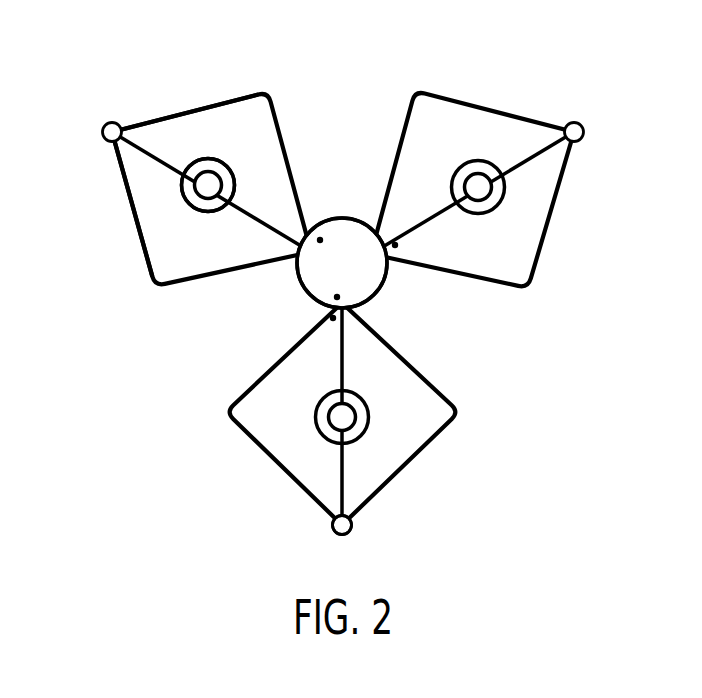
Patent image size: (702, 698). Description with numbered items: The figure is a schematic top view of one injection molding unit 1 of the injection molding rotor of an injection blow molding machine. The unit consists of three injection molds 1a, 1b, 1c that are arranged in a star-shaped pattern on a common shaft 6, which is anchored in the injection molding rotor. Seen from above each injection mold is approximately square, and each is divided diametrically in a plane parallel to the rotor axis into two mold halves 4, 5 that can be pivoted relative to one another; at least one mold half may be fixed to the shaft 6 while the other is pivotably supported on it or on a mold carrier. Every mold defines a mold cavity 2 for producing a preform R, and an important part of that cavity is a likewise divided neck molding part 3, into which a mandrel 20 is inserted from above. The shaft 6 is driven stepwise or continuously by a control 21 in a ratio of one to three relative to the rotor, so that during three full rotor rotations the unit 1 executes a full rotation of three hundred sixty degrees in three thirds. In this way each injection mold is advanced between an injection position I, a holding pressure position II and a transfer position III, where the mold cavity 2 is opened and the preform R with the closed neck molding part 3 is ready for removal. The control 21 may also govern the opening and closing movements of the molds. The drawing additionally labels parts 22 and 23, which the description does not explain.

The injection molding unit 1 is at (370, 79).
The injection mold 1a is at (124, 212).
The injection mold 1b is at (249, 450).
The injection mold 1c is at (488, 99).
The mold cavity 2 is at (236, 156).
The neck molding part 3 is at (186, 201).
The mold half 4 is at (130, 180).
The mold half 5 is at (225, 108).
The shaft 6 is at (306, 303).
The mandrel 20 is at (208, 158).
The control 21 is at (299, 273).
The coupling points 22 is at (321, 236).
The pivot 23 is at (346, 526).
The preform R is at (233, 180).
The injection position I is at (574, 112).
The holding pressure position II is at (96, 116).
The transfer position III is at (318, 533).